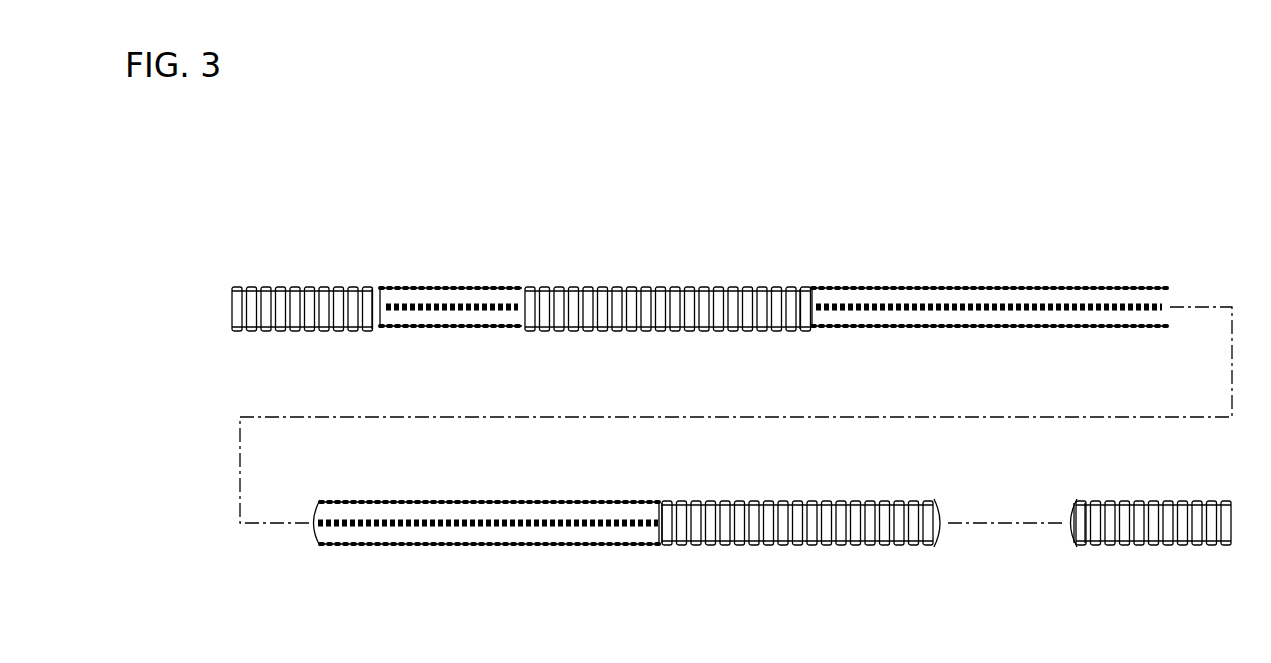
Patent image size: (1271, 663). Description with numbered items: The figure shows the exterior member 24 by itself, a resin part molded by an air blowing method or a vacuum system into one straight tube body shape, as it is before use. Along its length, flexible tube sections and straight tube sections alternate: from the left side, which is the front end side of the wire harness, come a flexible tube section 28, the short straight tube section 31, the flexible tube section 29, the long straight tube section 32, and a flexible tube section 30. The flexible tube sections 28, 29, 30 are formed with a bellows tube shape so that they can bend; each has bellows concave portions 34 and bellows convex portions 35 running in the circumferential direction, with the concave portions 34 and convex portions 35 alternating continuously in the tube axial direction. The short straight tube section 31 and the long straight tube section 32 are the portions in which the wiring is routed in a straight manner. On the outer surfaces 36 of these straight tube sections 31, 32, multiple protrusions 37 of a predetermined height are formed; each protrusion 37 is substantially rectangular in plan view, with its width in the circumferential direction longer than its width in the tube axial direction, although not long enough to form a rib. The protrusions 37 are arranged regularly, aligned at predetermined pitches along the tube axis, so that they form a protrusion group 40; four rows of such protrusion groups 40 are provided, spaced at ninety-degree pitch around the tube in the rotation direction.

The exterior member 24 is at (1032, 257).
The flexible tube section 28 is at (312, 287).
The flexible tube section 29 is at (689, 287).
The flexible tube section 30 is at (783, 501).
The short straight tube section 31 is at (461, 290).
The long straight tube section 32 is at (770, 408).
The bellows concave portion 34 is at (365, 331).
The bellows convex portion 35 is at (374, 330).
The outer surface 36 is at (396, 300).
The protrusion 37 is at (426, 330).
The protrusion group 40 is at (498, 327).